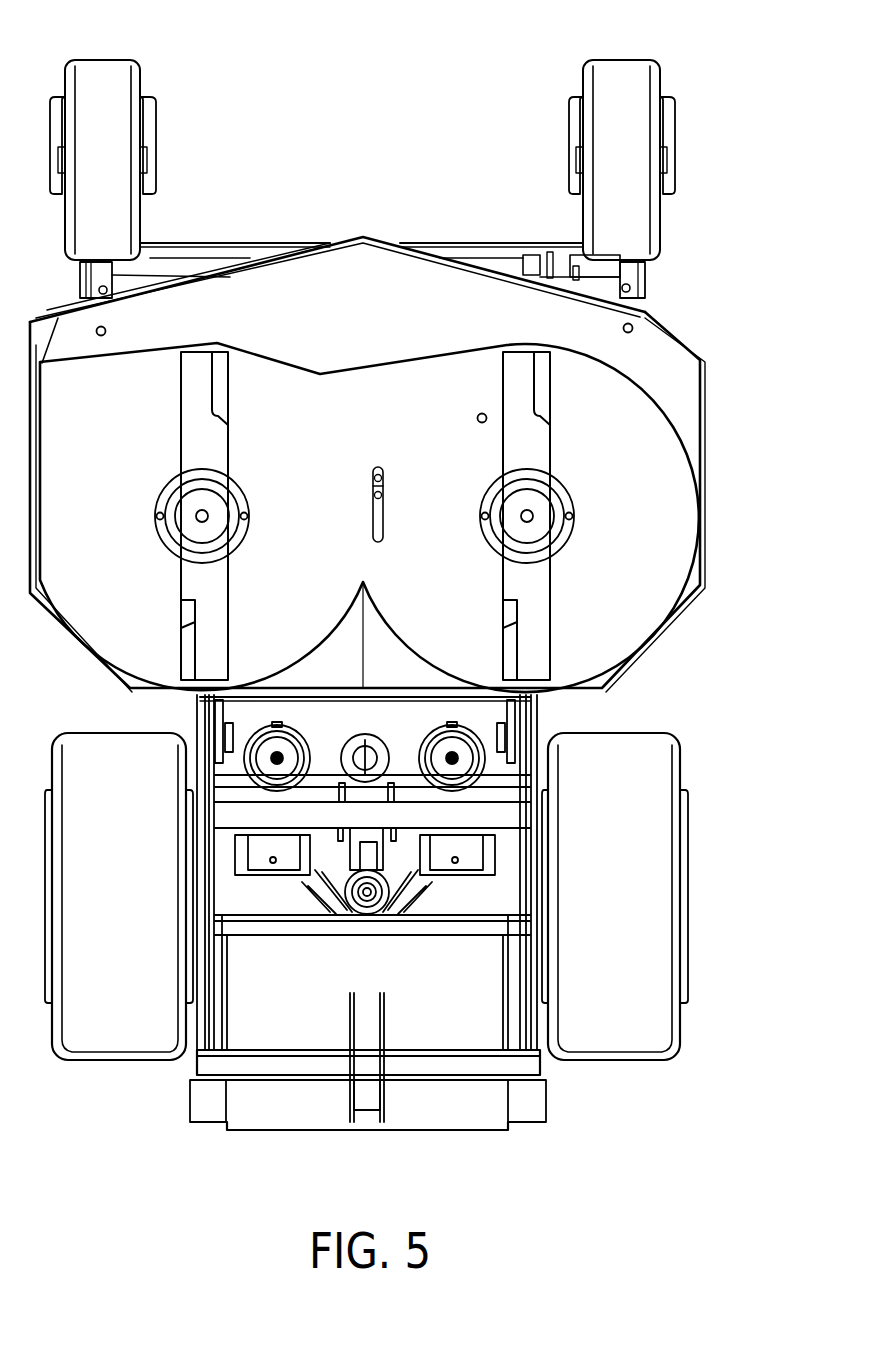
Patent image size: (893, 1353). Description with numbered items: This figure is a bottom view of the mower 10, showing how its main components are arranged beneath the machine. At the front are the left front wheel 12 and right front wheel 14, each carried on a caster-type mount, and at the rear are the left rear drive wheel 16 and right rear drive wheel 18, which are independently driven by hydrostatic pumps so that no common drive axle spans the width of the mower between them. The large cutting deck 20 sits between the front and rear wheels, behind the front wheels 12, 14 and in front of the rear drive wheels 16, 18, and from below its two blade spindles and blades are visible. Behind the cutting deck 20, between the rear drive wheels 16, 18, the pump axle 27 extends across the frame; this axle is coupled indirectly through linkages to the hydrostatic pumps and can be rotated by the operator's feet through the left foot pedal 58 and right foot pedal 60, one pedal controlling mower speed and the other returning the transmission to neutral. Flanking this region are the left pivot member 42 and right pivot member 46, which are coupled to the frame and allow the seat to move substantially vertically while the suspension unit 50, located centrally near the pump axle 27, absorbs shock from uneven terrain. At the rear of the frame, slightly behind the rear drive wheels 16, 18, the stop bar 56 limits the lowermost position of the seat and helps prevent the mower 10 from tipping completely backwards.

The mower 10 is at (742, 205).
The left front wheel 12 is at (620, 65).
The right front wheel 14 is at (107, 77).
The left rear drive wheel 16 is at (613, 1037).
The right rear drive wheel 18 is at (100, 1033).
The cutting deck 20 is at (707, 400).
The pump axle 27 is at (507, 812).
The left pivot member 42 is at (528, 728).
The right pivot member 46 is at (205, 728).
The suspension unit 50 is at (383, 908).
The stop bar 56 is at (270, 1063).
The left foot pedal 58 is at (490, 852).
The right foot pedal 60 is at (243, 852).